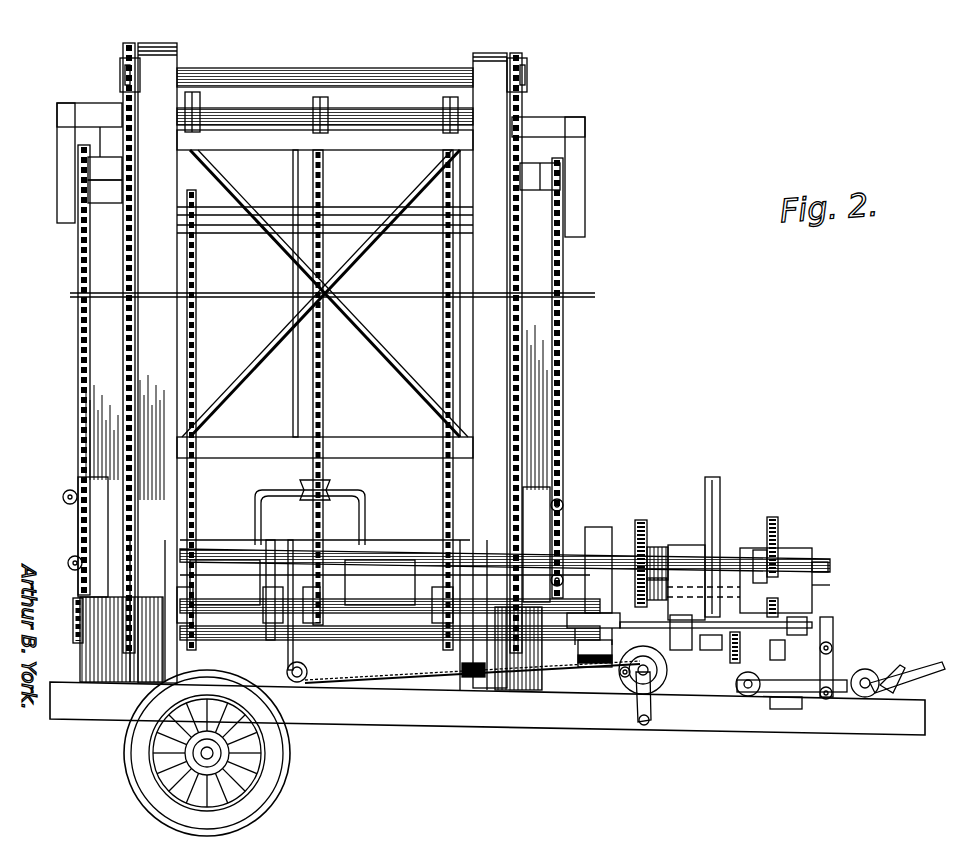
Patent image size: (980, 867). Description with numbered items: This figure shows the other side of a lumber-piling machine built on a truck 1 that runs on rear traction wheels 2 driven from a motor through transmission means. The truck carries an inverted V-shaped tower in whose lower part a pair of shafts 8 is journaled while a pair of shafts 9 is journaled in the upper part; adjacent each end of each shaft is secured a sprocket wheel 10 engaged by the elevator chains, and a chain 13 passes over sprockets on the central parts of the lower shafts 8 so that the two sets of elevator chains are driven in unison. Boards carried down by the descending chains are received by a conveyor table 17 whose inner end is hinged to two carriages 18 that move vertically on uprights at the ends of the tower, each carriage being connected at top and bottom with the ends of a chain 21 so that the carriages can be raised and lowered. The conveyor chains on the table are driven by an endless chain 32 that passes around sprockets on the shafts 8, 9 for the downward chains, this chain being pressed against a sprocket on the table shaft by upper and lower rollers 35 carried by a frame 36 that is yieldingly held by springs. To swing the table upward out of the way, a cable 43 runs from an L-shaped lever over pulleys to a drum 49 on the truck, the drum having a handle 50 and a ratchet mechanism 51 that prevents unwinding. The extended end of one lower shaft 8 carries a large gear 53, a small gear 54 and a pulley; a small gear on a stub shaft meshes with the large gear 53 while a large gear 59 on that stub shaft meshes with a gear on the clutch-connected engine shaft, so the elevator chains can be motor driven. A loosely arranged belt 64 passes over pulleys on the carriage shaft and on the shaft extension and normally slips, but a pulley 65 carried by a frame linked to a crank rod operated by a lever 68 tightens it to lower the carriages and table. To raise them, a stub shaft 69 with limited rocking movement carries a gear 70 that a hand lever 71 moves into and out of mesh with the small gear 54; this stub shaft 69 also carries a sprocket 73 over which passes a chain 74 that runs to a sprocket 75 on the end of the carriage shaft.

The truck 1 is at (487, 708).
The rear traction wheels 2 is at (283, 760).
The lower shafts 8 is at (620, 550).
The upper shafts 9 is at (355, 108).
The sprocket wheel 10 is at (120, 63).
The chain 13 is at (268, 581).
The conveyor table 17 is at (266, 618).
The carriages 18 is at (78, 532).
The chain 21 is at (78, 395).
The endless chain 32 is at (318, 400).
The upper and lower rollers 35 is at (330, 488).
The frame 36 is at (366, 502).
The cable 43 is at (293, 182).
The drum 49 is at (660, 688).
The handle 50 is at (640, 720).
The ratchet mechanism 51 is at (627, 680).
The large gear 53 is at (641, 520).
The small gear 54 is at (656, 547).
The large gear 59 is at (778, 522).
The belt 64 is at (598, 597).
The pulley 65 is at (592, 670).
The lever 68 is at (918, 665).
The stub shaft 69 is at (757, 552).
The gear 70 is at (667, 584).
The hand lever 71 is at (840, 680).
The sprocket 73 is at (718, 566).
The chain 74 is at (762, 614).
The sprocket 75 is at (740, 652).